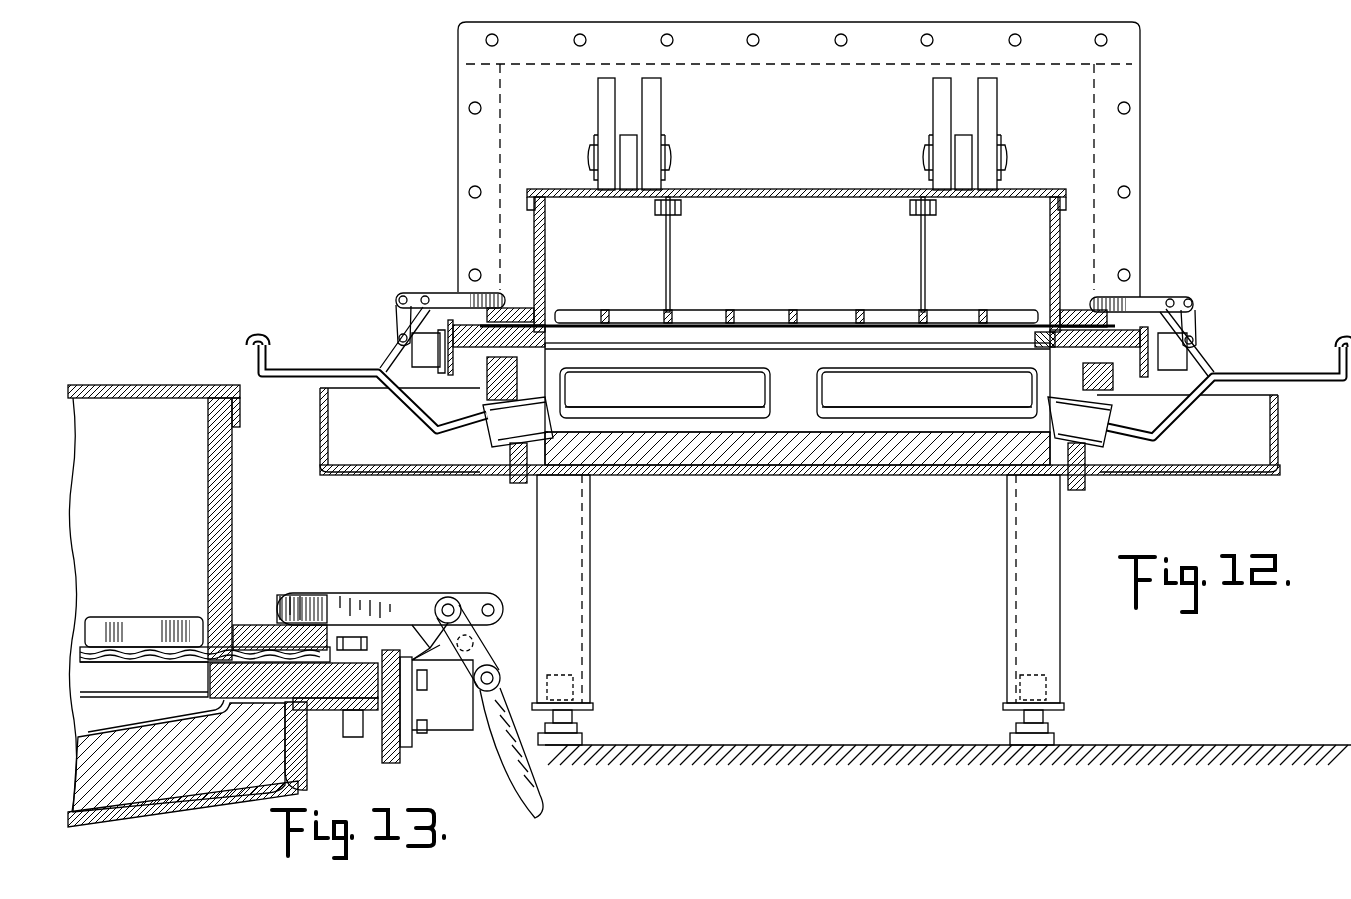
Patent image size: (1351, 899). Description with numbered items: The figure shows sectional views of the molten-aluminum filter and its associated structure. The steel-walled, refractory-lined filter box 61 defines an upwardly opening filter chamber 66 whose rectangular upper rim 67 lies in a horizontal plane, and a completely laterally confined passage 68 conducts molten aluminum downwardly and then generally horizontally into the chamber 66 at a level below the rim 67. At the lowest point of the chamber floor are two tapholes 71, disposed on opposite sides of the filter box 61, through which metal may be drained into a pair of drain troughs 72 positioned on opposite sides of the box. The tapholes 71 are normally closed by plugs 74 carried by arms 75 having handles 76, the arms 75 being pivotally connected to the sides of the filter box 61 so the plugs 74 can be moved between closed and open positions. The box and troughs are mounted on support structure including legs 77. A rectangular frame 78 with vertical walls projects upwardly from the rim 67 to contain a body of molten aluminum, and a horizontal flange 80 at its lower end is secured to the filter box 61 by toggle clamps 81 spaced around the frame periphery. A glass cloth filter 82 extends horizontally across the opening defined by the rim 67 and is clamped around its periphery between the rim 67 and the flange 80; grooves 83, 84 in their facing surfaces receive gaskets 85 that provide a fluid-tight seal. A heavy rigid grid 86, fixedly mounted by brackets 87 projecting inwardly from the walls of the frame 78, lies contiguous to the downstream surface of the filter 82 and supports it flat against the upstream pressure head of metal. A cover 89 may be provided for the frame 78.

In FIG. 12, the filter box 61 is at (693, 472).
In FIG. 13, the filter box 61 is at (148, 792).
In FIG. 12, the filter chamber 66 is at (808, 372).
In FIG. 13, the filter chamber 66 is at (140, 690).
In FIG. 13, the upper rim 67 is at (215, 670).
In FIG. 12, the passage 68 is at (842, 400).
In FIG. 12, the tapholes 71 is at (1012, 478).
In FIG. 12, the drain troughs 72 is at (355, 468).
In FIG. 12, the plugs 74 is at (495, 452).
In FIG. 12, the arms 75 is at (336, 372).
In FIG. 12, the handles 76 is at (258, 338).
In FIG. 12, the legs 77 is at (575, 562).
In FIG. 12, the frame 78 is at (548, 238).
In FIG. 13, the frame 78 is at (232, 492).
In FIG. 12, the flange 80 is at (517, 305).
In FIG. 13, the flange 80 is at (313, 627).
In FIG. 12, the toggle clamps 81 is at (447, 294).
In FIG. 13, the toggle clamps 81 is at (404, 600).
In FIG. 12, the glass cloth filter 82 is at (833, 324).
In FIG. 13, the glass cloth filter 82 is at (82, 650).
In FIG. 12, the groove 83 is at (1048, 340).
In FIG. 13, the groove 83 is at (305, 762).
In FIG. 12, the groove 84 is at (1050, 330).
In FIG. 13, the groove 84 is at (240, 624).
In FIG. 13, the gaskets 85 is at (286, 605).
In FIG. 12, the grid 86 is at (792, 311).
In FIG. 13, the grid 86 is at (140, 618).
In FIG. 12, the brackets 87 is at (688, 215).
In FIG. 12, the cover 89 is at (806, 188).
In FIG. 13, the cover 89 is at (146, 366).